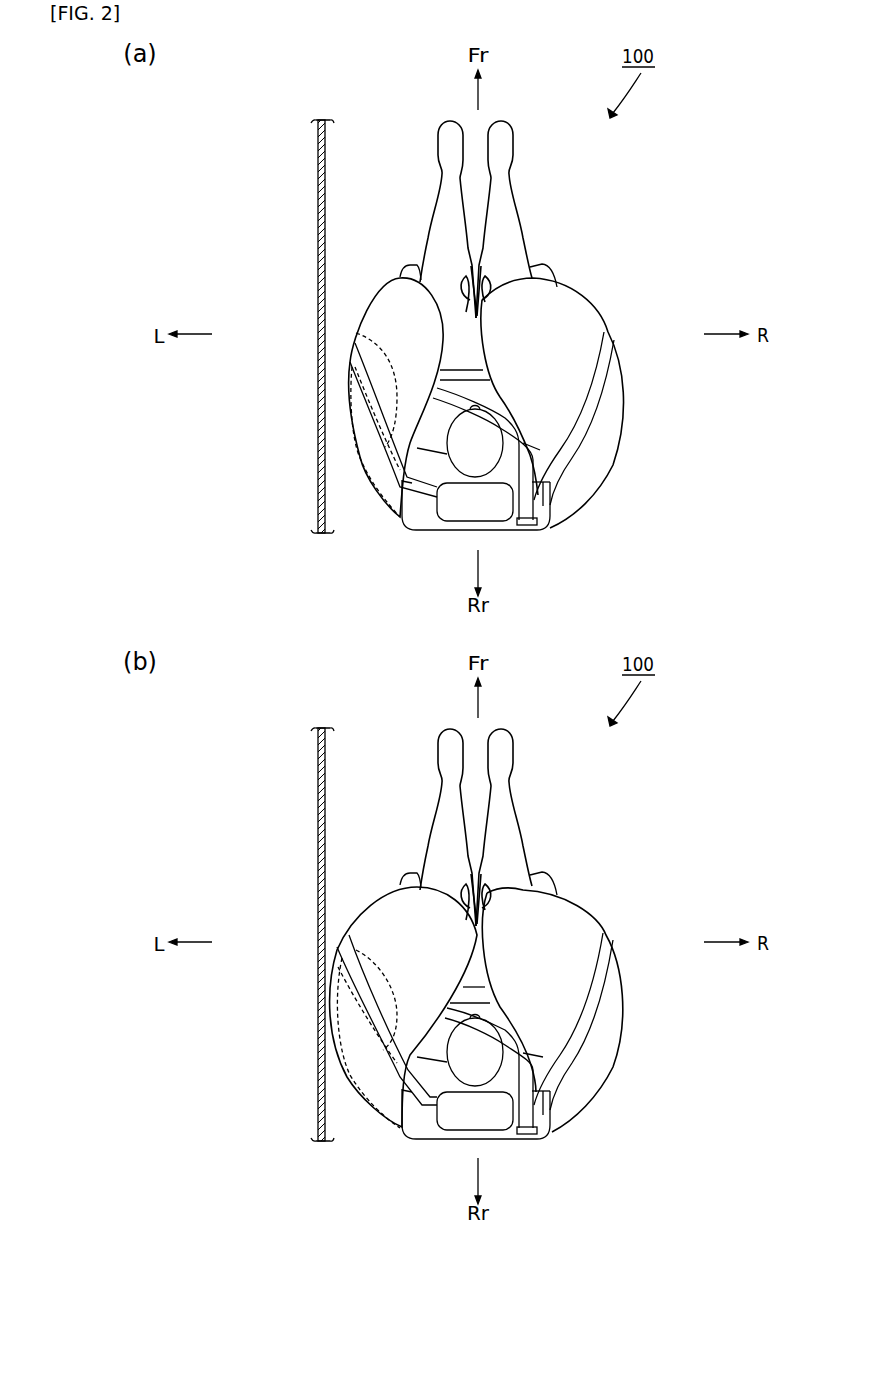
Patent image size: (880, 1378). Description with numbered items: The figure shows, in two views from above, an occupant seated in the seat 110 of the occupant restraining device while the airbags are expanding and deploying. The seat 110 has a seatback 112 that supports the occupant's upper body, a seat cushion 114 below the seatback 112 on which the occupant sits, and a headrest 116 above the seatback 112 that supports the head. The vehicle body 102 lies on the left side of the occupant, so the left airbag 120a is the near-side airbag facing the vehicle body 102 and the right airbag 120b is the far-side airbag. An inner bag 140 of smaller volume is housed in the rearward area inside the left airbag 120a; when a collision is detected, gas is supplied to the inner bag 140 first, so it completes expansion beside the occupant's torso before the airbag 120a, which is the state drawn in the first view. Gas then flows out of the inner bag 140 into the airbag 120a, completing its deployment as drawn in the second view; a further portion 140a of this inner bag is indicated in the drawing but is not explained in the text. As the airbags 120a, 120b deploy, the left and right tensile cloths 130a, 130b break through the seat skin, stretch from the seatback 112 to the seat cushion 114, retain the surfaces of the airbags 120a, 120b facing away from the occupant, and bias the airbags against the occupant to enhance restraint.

The vehicle body 102 is at (320, 490).
The seat 110 is at (553, 538).
The seatback 112 is at (511, 528).
The seat cushion 114 is at (413, 262).
The headrest 116 is at (455, 512).
The left side airbag 120a is at (383, 300).
The right side airbag 120b is at (577, 320).
The left side tensile cloth 130a is at (362, 400).
The right side tensile cloth 130b is at (603, 383).
The inner bag 140 is at (386, 503).
The side cushion inner portion 140a is at (356, 333).